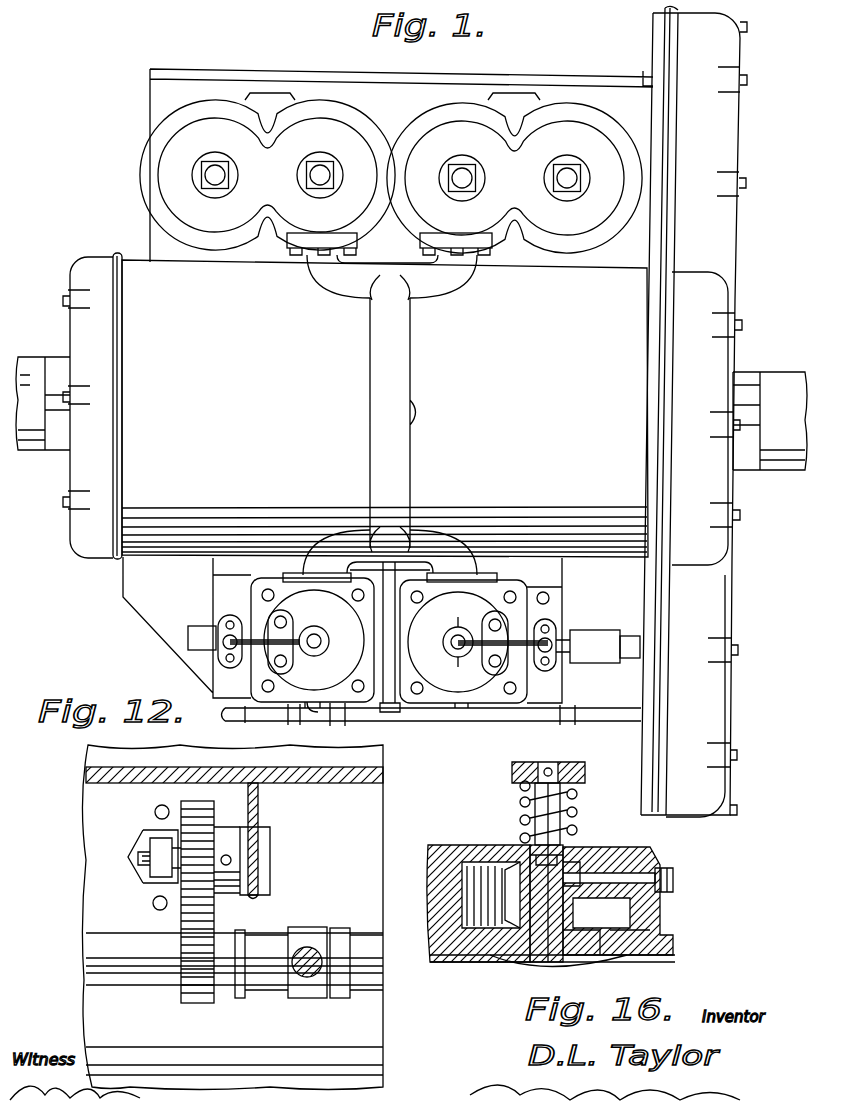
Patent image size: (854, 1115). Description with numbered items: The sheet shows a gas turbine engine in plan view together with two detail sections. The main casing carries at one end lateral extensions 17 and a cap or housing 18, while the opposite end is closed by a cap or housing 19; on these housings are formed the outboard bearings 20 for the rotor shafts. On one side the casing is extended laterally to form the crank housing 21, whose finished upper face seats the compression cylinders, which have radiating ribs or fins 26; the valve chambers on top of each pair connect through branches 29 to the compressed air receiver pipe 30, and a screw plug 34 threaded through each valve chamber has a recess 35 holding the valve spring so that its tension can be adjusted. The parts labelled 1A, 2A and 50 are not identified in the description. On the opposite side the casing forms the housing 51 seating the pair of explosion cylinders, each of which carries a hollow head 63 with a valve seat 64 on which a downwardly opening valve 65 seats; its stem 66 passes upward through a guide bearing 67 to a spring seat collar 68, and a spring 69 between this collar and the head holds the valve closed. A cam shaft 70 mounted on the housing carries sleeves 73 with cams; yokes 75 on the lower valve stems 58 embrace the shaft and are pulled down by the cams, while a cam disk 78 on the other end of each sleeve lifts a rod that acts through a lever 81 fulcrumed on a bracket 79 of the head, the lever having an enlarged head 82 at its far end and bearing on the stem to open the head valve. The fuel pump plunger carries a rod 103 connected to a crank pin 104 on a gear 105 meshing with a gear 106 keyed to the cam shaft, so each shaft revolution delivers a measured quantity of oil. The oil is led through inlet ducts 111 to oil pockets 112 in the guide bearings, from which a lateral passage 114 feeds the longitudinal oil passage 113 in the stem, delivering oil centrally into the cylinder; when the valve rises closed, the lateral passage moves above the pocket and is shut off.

In FIG. 1, the pipe fitting 1A is at (20, 357).
In FIG. 1, the pump housing 2A is at (183, 138).
In FIG. 1, the lateral extensions 17 is at (658, 36).
In FIG. 1, the cap or housing 18 is at (718, 158).
In FIG. 1, the cap or housing 19 is at (94, 265).
In FIG. 1, the outboard bearings 20 is at (78, 264).
In FIG. 1, the crank housing 21 is at (416, 97).
In FIG. 1, the radiating ribs or fins 26 is at (146, 160).
In FIG. 1, the branches 29 is at (440, 280).
In FIG. 1, the compressed air receiver pipe 30 is at (386, 350).
In FIG. 1, the plug 34 is at (306, 175).
In FIG. 1, the recess 35 is at (235, 193).
In FIG. 1, the lug 50 is at (271, 92).
In FIG. 1, the housing 51 is at (548, 688).
In FIG. 12, the housing 51 is at (110, 903).
In FIG. 12, the stem 58 is at (310, 933).
In FIG. 1, the hollow head 63 is at (262, 600).
In FIG. 16, the hollow head 63 is at (653, 923).
In FIG. 16, the valve seat 64 is at (605, 958).
In FIG. 16, the downwardly opening valve 65 is at (573, 956).
In FIG. 16, the stem 66 is at (548, 813).
In FIG. 16, the guide bearing 67 is at (438, 955).
In FIG. 1, the spring seat collar 68 is at (320, 654).
In FIG. 16, the spring seat collar 68 is at (512, 770).
In FIG. 16, the spring 69 is at (575, 838).
In FIG. 1, the cam shaft 70 is at (577, 662).
In FIG. 12, the cam shaft 70 is at (150, 958).
In FIG. 12, the sleeves 73 is at (373, 977).
In FIG. 12, the yokes 75 is at (315, 988).
In FIG. 12, the cam disk 78 is at (340, 930).
In FIG. 1, the bracket 79 is at (281, 610).
In FIG. 1, the lever 81 is at (386, 641).
In FIG. 1, the enlarged head 82 is at (233, 640).
In FIG. 12, the rod 103 is at (137, 854).
In FIG. 12, the crank pin 104 is at (143, 840).
In FIG. 12, the gear 105 is at (205, 808).
In FIG. 12, the gear 106 is at (193, 976).
In FIG. 16, the inlet ducts 111 is at (652, 870).
In FIG. 16, the oil pockets 112 is at (530, 872).
In FIG. 16, the longitudinal oil passage 113 is at (537, 960).
In FIG. 16, the lateral passage 114 is at (582, 866).